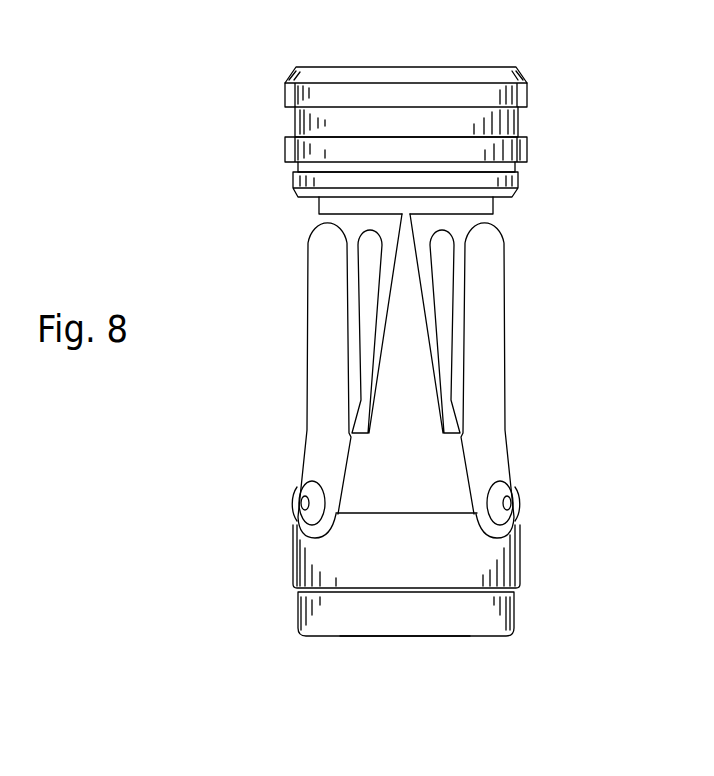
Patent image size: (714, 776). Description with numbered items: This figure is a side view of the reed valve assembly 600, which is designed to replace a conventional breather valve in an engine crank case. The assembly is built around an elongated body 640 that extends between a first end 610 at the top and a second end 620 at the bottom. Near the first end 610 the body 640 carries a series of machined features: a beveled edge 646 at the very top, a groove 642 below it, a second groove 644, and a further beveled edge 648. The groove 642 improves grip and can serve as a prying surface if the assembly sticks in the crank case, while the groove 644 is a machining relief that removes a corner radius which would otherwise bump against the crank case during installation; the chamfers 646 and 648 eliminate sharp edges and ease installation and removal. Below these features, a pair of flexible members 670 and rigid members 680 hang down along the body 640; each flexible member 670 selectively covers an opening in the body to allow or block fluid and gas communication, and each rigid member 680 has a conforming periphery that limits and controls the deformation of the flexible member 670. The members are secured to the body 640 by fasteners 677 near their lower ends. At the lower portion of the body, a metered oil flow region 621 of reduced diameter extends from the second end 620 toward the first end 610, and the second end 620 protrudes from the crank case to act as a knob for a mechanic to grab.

The reed valve assembly 600 is at (535, 77).
The first end 610 is at (370, 66).
The beveled edge 646 is at (290, 78).
The groove 642 is at (296, 127).
The groove 644 is at (292, 171).
The beveled edge 648 is at (292, 193).
The flexible member 670 is at (368, 277).
The rigid member 680 is at (322, 336).
The fastener 677 is at (296, 521).
The elongated body 640 is at (294, 571).
The metered oil flow region 621 is at (533, 590).
The second end 620 is at (408, 636).